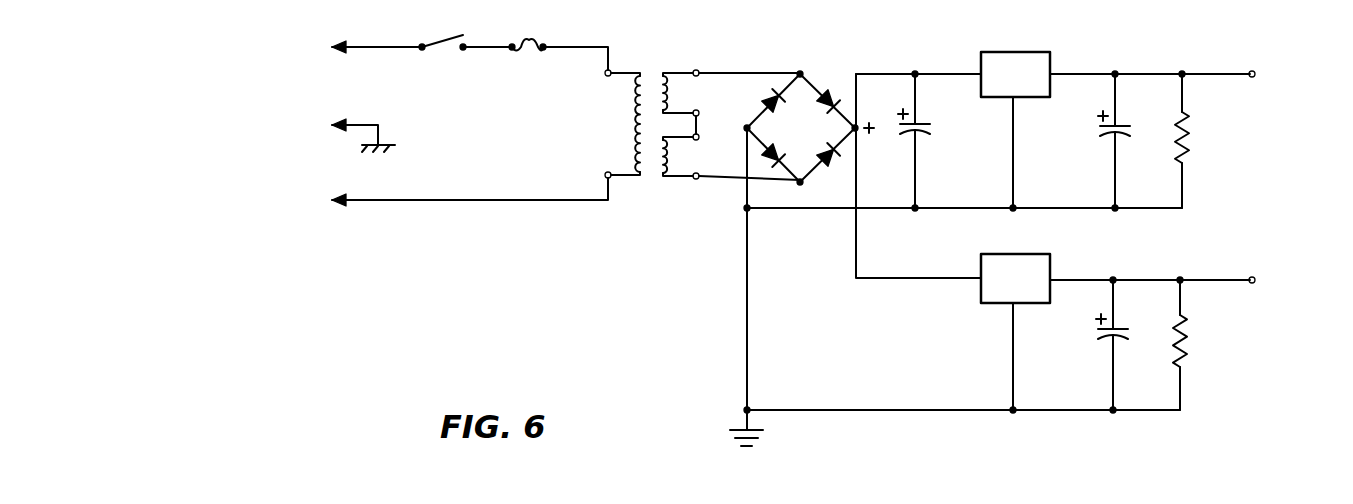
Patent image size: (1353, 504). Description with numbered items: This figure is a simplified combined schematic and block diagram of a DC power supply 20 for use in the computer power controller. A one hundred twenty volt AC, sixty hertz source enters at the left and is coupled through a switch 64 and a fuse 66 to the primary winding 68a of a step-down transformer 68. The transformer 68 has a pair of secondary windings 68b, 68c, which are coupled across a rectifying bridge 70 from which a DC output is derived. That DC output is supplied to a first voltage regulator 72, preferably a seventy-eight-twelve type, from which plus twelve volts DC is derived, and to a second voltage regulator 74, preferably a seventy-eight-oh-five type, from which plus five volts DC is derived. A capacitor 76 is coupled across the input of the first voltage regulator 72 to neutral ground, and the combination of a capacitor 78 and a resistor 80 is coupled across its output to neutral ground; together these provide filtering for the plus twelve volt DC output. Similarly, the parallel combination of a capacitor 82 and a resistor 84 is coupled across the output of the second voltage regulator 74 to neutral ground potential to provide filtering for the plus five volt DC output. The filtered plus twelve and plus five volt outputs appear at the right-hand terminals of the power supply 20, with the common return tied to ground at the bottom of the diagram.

The DC power supply 20 is at (769, 240).
The switch 64 is at (446, 60).
The fuse 66 is at (528, 52).
The step-down transformer 68 is at (646, 150).
The primary winding 68a is at (636, 119).
The secondary winding 68b is at (672, 92).
The secondary winding 68c is at (672, 157).
The rectifying bridge 70 is at (816, 138).
The first voltage regulator 72 is at (1014, 131).
The second voltage regulator 74 is at (1014, 333).
The capacitor 76 is at (932, 130).
The capacitor 78 is at (1098, 130).
The resistor 80 is at (1190, 132).
The capacitor 82 is at (1097, 334).
The resistor 84 is at (1188, 336).